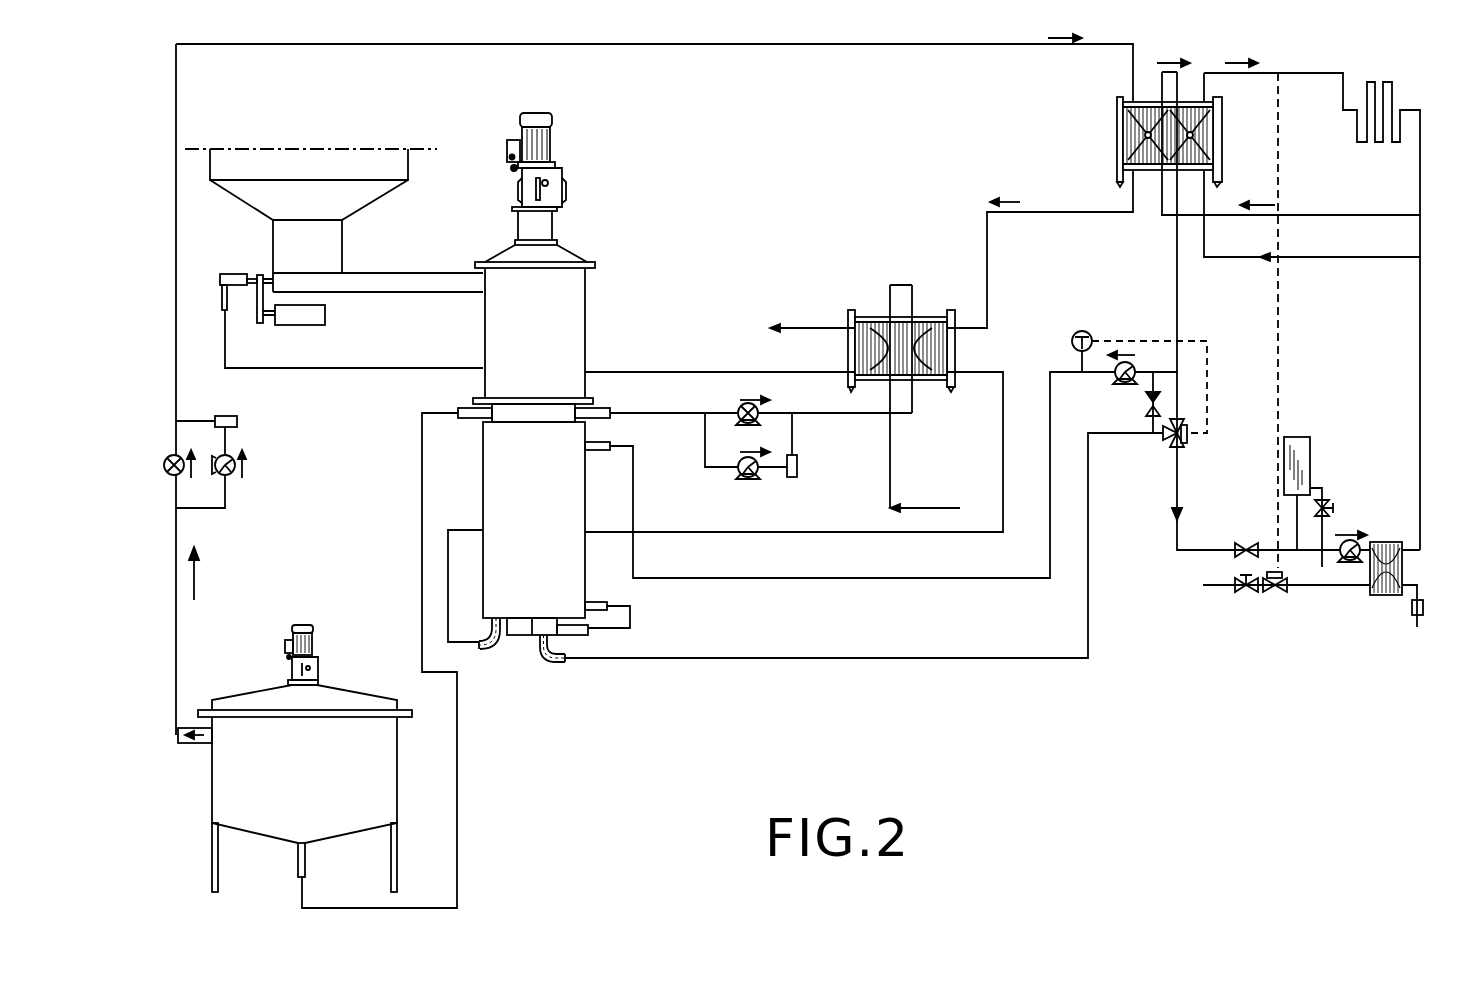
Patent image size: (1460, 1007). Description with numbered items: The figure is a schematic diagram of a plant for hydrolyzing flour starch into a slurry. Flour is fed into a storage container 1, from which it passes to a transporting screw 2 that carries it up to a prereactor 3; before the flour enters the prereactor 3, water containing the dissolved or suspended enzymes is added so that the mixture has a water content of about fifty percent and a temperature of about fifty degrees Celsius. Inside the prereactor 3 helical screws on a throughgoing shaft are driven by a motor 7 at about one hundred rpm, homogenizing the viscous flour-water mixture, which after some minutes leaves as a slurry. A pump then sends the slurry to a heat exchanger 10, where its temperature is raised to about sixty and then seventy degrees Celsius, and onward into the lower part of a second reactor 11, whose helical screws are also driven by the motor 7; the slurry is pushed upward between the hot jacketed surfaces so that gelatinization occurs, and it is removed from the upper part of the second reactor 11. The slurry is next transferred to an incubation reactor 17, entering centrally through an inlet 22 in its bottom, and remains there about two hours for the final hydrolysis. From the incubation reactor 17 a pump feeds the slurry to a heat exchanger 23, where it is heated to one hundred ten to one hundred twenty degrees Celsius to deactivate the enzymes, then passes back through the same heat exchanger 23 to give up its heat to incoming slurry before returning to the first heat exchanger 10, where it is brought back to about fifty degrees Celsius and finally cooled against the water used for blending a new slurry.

The storage container 1 is at (360, 200).
The transporting screw 2 is at (408, 287).
The prereactor 3 is at (588, 291).
The motor 7 is at (553, 145).
The heat exchanger 10 is at (866, 312).
The second reactor 11 is at (570, 515).
The incubation reactor 17 is at (345, 697).
The inlet 22 is at (298, 863).
The heat exchanger 23 is at (1117, 124).